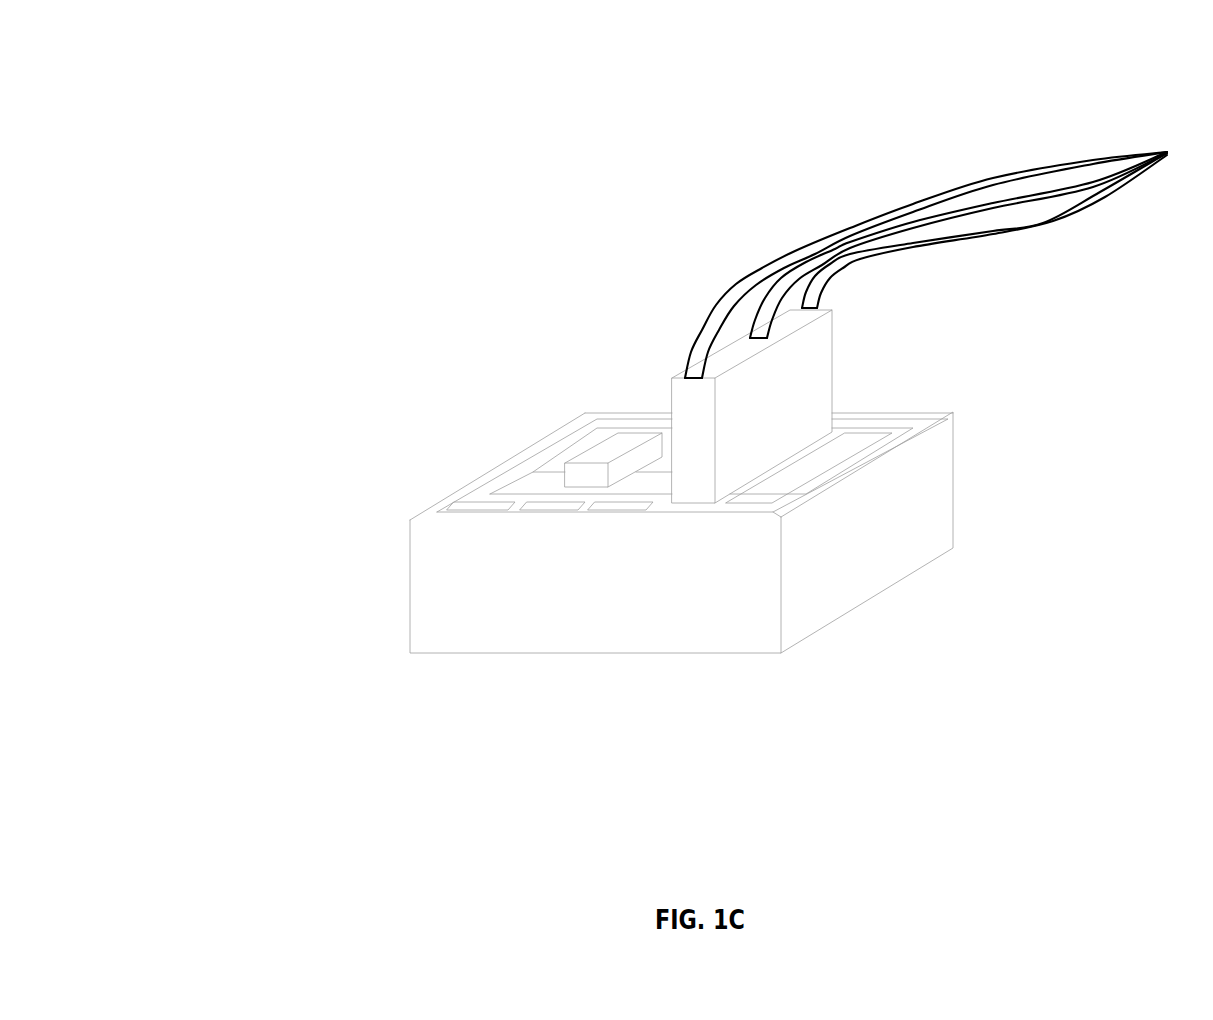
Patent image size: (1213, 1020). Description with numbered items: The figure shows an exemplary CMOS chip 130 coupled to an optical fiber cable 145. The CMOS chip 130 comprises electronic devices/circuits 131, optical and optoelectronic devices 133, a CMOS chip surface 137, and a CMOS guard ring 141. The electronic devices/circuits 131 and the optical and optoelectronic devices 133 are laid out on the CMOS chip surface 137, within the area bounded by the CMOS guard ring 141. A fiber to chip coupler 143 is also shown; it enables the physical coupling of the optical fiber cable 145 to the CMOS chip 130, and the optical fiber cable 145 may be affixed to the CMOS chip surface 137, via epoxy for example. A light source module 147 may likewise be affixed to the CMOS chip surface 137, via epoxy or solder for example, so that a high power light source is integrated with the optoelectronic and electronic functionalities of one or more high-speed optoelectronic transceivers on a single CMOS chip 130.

The CMOS chip 130 is at (266, 97).
The electronic devices/circuits 131 is at (858, 439).
The optical and optoelectronic devices 133 is at (522, 474).
The CMOS chip surface 137 is at (470, 278).
The CMOS guard ring 141 is at (932, 481).
The fiber to chip coupler 143 is at (832, 339).
The optical fiber cable 145 is at (868, 203).
The light source module 147 is at (606, 420).